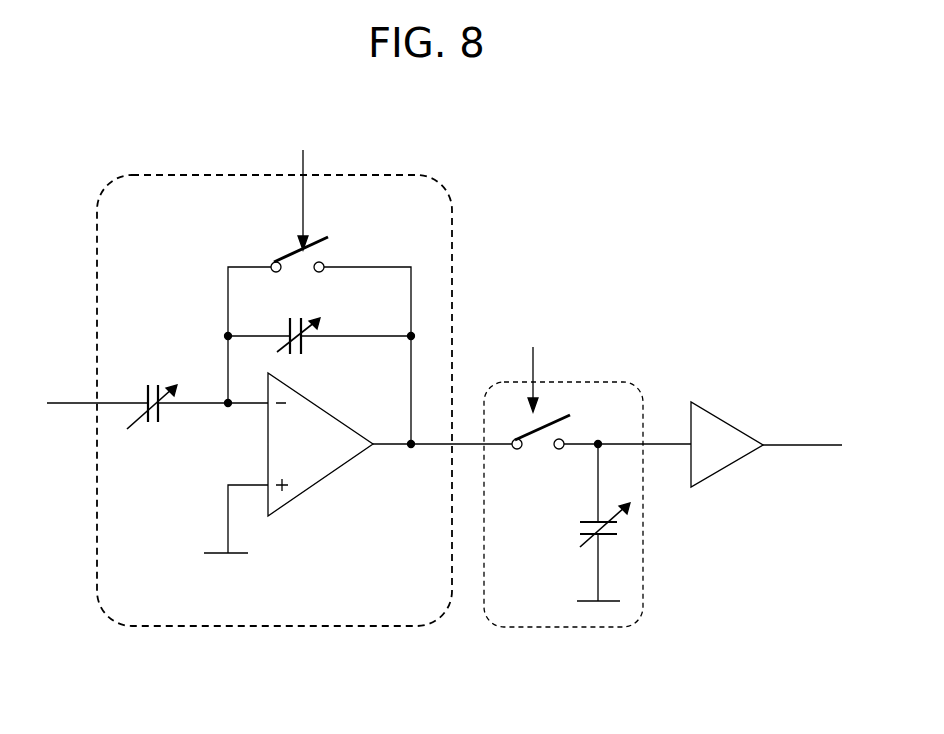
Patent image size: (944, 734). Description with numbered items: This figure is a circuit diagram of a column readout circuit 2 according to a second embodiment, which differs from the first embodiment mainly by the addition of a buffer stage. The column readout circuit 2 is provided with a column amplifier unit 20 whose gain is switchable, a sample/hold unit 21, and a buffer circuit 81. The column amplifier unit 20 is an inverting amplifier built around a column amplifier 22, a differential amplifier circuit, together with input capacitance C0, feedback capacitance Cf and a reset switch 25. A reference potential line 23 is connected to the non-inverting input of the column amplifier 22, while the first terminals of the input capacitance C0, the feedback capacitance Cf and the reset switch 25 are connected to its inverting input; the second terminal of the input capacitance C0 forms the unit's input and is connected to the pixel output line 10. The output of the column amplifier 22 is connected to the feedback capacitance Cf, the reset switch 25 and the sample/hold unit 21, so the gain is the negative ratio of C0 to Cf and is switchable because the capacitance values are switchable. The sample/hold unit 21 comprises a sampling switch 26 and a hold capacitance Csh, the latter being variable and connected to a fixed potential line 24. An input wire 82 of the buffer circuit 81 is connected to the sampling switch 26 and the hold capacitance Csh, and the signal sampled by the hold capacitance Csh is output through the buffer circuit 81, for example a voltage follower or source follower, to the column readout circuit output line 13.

The column readout circuit 2 is at (590, 302).
The pixel output line 10 is at (120, 403).
The column readout circuit output line 13 is at (792, 445).
The column amplifier unit 20 is at (268, 627).
The sample/hold unit 21 is at (615, 627).
The column amplifier 22 is at (318, 482).
The reference potential line 23 is at (216, 556).
The fixed potential line 24 is at (587, 603).
The reset switch 25 is at (328, 222).
The sampling switch 26 is at (558, 416).
The buffer circuit 81 is at (725, 420).
The input wire 82 is at (661, 444).
The input capacitance C0 is at (158, 385).
The feedback capacitance Cf is at (308, 316).
The hold capacitance Csh is at (633, 527).